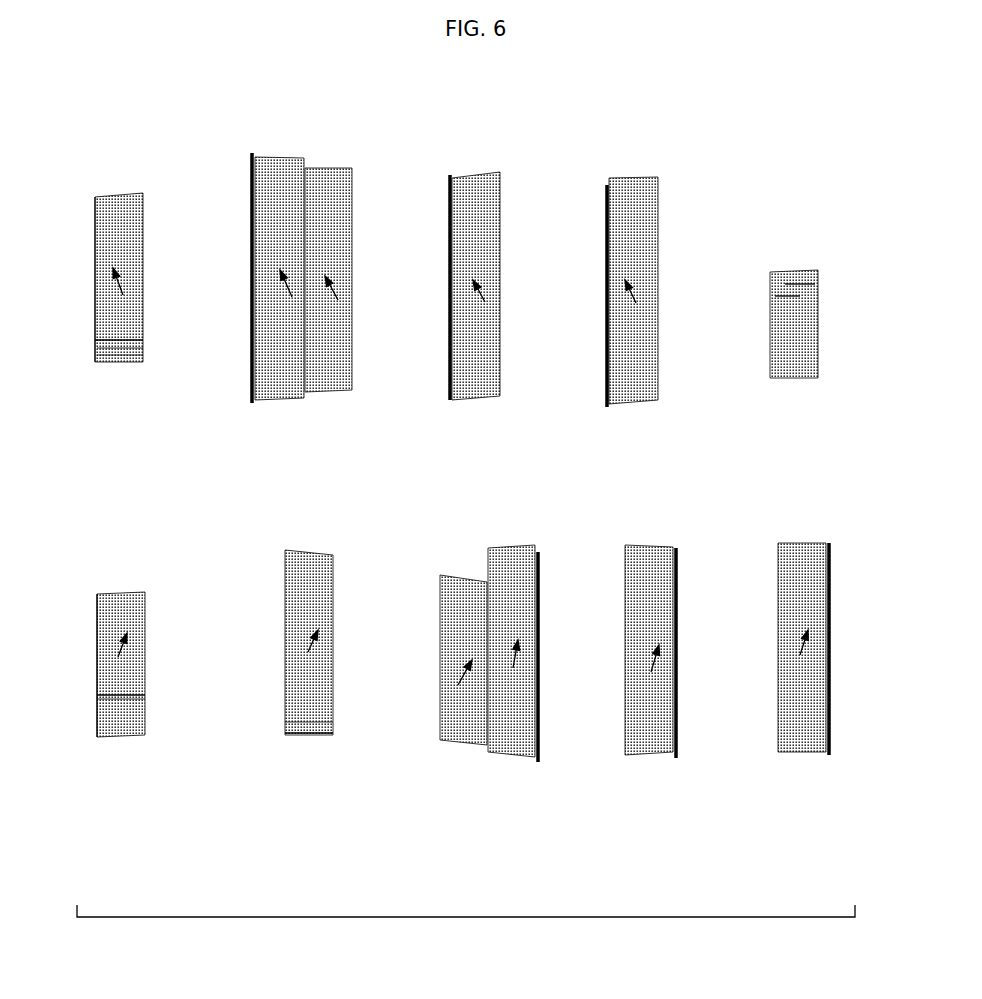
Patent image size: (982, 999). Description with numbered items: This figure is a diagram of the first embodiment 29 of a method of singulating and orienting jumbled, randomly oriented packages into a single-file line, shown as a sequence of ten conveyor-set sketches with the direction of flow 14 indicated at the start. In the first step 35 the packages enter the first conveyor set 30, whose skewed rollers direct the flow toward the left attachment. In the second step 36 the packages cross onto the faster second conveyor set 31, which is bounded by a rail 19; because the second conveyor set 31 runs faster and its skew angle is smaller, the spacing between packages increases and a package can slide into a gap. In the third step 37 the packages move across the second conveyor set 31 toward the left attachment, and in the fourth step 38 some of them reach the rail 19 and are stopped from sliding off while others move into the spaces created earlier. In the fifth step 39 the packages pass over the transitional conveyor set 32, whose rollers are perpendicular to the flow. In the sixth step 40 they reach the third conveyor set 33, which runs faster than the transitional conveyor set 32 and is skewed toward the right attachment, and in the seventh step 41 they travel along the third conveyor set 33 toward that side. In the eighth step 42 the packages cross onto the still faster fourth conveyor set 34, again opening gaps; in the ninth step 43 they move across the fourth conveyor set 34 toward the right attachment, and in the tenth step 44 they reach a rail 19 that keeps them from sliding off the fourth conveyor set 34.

The direction of flow 14 is at (118, 372).
The rail 19 is at (250, 415).
The first embodiment of the method 29 is at (465, 917).
The first conveyor set 30 is at (95, 197).
The second conveyor set 31 is at (249, 157).
The transitional conveyor set 32 is at (770, 275).
The third conveyor set 33 is at (152, 595).
The fourth conveyor set 34 is at (619, 547).
The first step 35 is at (125, 100).
The second step 36 is at (302, 100).
The third step 37 is at (480, 100).
The fourth step 38 is at (641, 106).
The fifth step 39 is at (799, 101).
The sixth step 40 is at (116, 846).
The seventh step 41 is at (298, 846).
The eighth step 42 is at (489, 852).
The ninth step 43 is at (648, 855).
The tenth step 44 is at (800, 851).